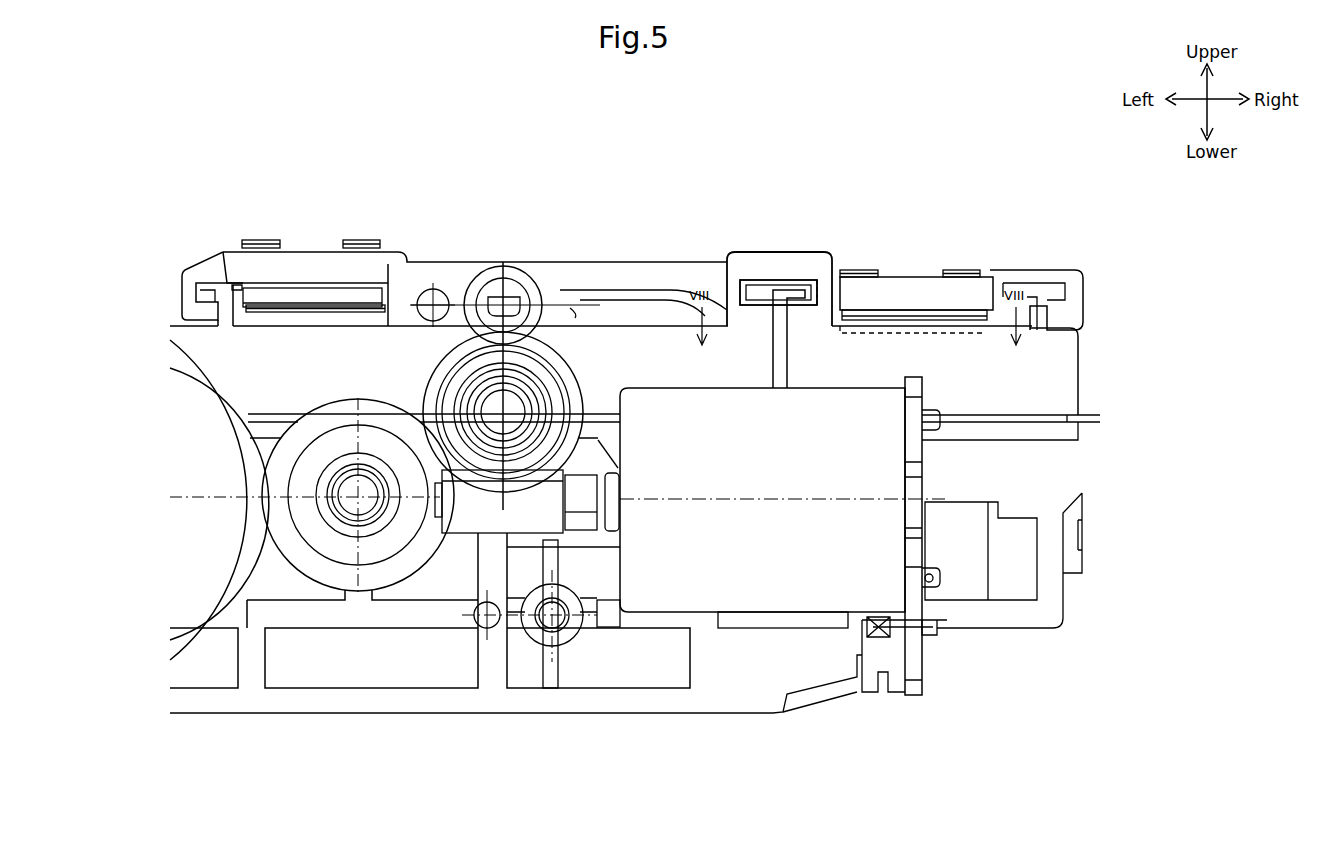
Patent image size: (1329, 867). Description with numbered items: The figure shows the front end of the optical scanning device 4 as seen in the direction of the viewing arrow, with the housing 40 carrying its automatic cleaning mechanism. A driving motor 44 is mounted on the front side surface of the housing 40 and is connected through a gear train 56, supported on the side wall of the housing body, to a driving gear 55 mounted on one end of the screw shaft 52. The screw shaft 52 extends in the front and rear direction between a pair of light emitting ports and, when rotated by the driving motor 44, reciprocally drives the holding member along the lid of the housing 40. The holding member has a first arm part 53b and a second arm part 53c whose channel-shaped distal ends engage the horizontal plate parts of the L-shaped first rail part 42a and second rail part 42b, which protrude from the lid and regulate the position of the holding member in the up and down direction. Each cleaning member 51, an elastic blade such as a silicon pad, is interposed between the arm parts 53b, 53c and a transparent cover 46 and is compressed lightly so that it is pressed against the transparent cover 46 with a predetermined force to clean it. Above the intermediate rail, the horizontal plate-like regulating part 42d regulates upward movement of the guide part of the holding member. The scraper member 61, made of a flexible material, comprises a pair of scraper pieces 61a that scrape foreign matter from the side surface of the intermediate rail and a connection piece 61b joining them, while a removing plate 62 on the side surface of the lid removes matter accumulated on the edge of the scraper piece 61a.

The optical scanning device 4 is at (183, 189).
The housing 40 is at (520, 717).
The first rail part 42a is at (1050, 295).
The second rail part 42b is at (215, 293).
The regulating part 42d is at (812, 268).
The driving motor 44 is at (772, 613).
The transparent cover 46 is at (353, 305).
The cleaning member 51 is at (333, 298).
The screw shaft 52 is at (508, 294).
The first arm part 53b is at (924, 292).
The second arm part 53c is at (302, 262).
The driving gear 55 is at (541, 292).
The gear train 56 is at (210, 630).
The scraper member 61 is at (924, 183).
The scraper piece 61a is at (838, 298).
The connection piece 61b is at (813, 298).
The removing plate 62 is at (773, 356).